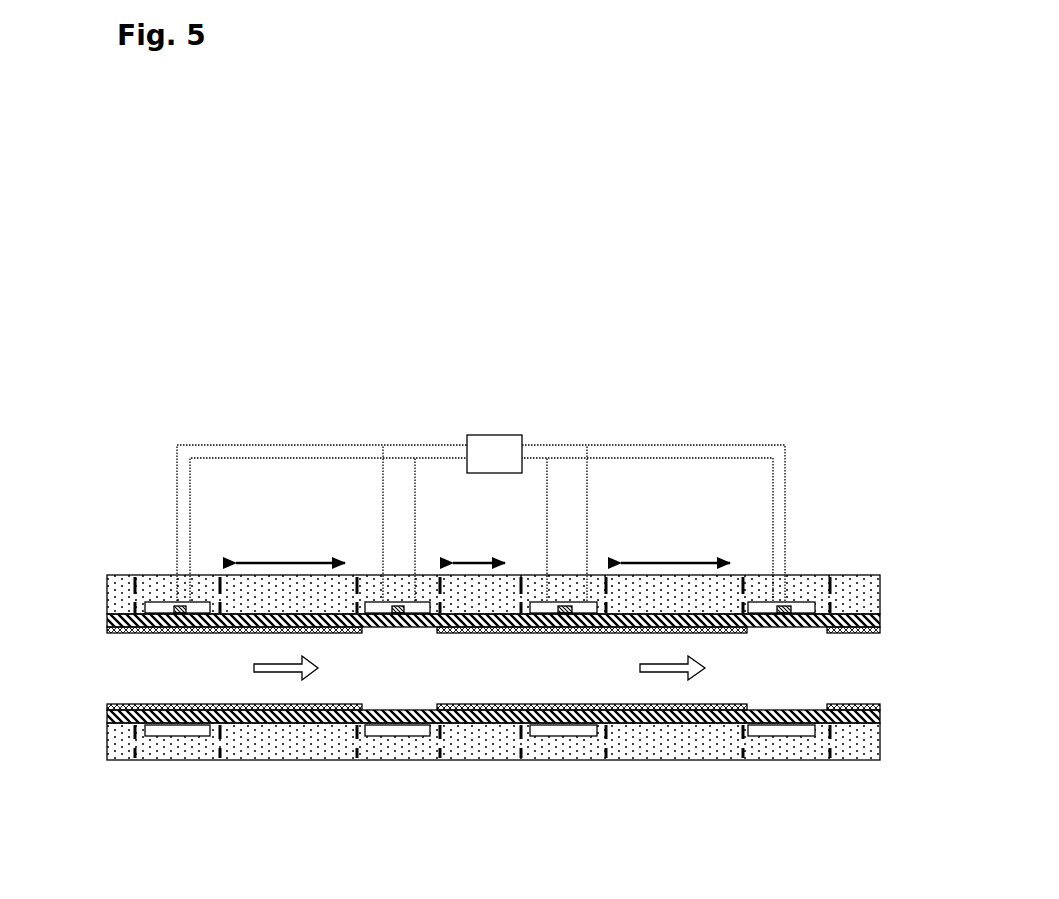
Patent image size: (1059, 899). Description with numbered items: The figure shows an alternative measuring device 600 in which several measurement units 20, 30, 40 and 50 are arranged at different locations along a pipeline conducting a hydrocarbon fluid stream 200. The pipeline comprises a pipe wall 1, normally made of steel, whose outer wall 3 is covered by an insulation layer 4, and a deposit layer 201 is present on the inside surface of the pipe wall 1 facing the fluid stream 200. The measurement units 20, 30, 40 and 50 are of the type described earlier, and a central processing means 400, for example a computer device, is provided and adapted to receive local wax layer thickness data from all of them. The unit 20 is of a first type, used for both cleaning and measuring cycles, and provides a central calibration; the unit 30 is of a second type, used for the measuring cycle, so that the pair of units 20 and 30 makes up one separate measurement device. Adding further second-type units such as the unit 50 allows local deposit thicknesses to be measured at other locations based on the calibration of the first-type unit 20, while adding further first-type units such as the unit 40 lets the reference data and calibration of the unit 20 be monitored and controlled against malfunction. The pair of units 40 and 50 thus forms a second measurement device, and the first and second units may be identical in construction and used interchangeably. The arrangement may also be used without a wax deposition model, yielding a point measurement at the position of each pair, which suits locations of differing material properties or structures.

The sensor arrangement 600 is at (551, 283).
The measurement unit of the second type 50 is at (168, 545).
The measurement unit of the first type 40 is at (372, 558).
The measurement unit of the second type 30 is at (595, 558).
The measurement unit of the first type 20 is at (798, 560).
The central processing means 400 is at (509, 465).
The hydrocarbon fluid stream 200 is at (497, 680).
The deposit layer 201 is at (140, 630).
The pipe wall 1 is at (302, 712).
The outer wall 3 is at (120, 726).
The insulation layer 4 is at (108, 716).